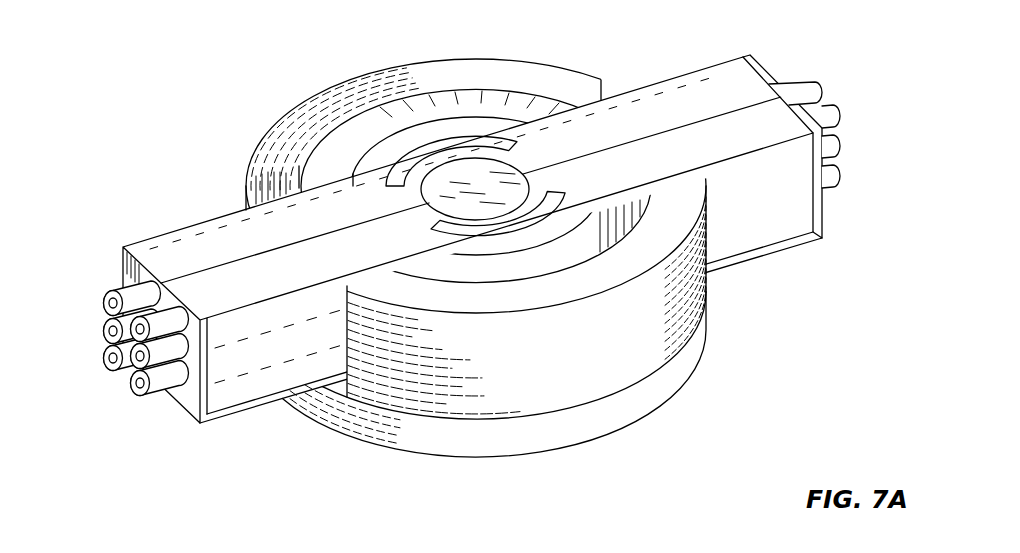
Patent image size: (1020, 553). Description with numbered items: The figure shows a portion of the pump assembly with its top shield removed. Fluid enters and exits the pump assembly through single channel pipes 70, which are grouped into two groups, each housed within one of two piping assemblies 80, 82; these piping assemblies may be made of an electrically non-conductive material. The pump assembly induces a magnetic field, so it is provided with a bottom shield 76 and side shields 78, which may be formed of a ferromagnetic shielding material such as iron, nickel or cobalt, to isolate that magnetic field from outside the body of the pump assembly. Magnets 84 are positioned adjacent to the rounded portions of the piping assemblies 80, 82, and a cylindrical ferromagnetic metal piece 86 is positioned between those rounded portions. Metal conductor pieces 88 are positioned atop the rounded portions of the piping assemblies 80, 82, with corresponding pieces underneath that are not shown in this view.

The single channel pipes 70 is at (105, 353).
The bottom shield 76 is at (585, 445).
The side shields 78 is at (250, 148).
The piping assembly 80 is at (183, 228).
The piping assembly 82 is at (240, 392).
The magnets 84 is at (492, 107).
The cylindrical ferromagnetic metal piece 86 is at (507, 173).
The metal conductor pieces 88 is at (417, 150).